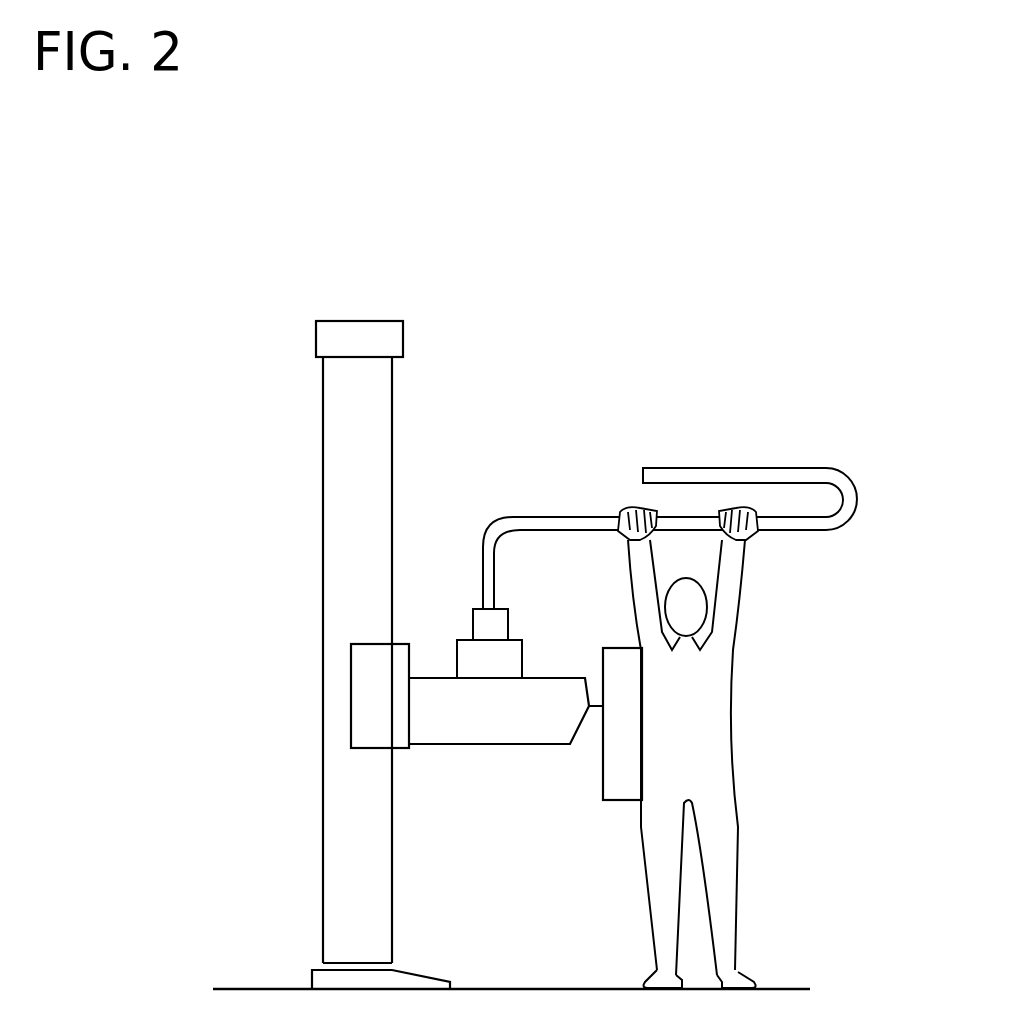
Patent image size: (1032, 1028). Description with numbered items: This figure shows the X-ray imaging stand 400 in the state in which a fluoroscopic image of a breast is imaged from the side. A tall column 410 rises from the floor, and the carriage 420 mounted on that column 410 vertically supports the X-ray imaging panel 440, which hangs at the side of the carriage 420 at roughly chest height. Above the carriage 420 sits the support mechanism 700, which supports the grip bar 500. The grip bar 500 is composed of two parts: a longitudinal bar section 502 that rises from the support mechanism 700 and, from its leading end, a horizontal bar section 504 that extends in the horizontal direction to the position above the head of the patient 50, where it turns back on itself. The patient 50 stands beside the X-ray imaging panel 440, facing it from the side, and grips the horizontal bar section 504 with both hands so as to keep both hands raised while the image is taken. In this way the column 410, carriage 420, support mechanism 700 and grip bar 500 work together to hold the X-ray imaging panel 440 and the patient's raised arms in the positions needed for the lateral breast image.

The X-ray imaging stand 400 is at (580, 135).
The column 410 is at (337, 492).
The carriage 420 is at (353, 667).
The X-ray imaging panel 440 is at (607, 762).
The support mechanism 700 is at (512, 648).
The grip bar 500 is at (685, 440).
The longitudinal bar section 502 is at (484, 548).
The horizontal bar section 504 is at (708, 520).
The patient 50 is at (722, 762).